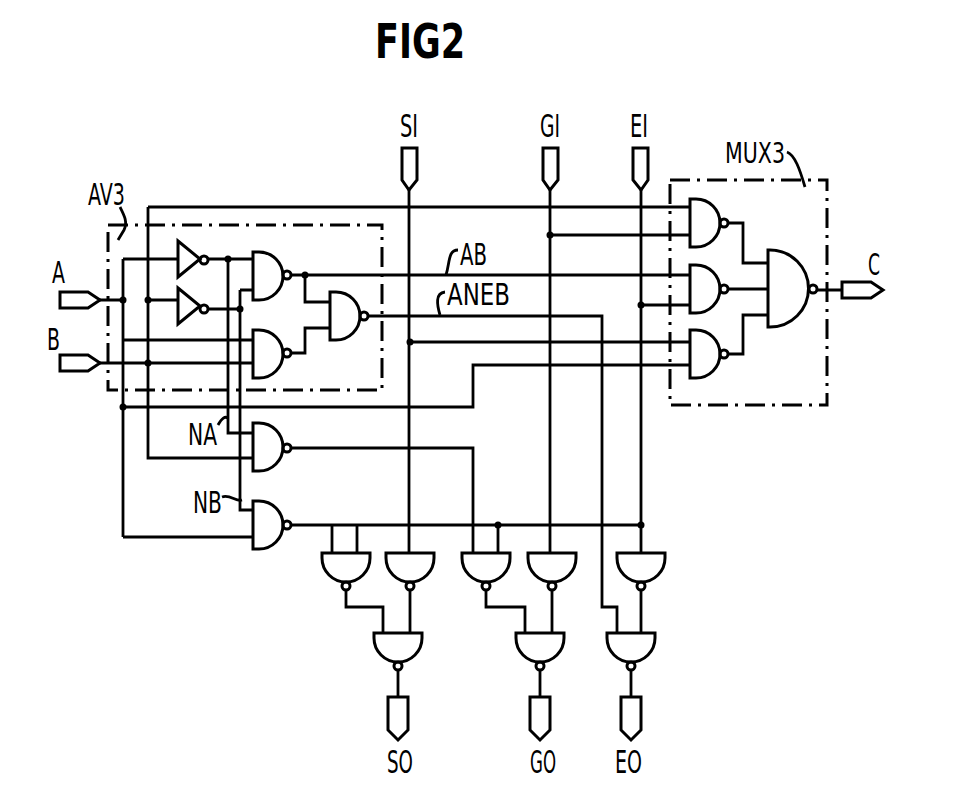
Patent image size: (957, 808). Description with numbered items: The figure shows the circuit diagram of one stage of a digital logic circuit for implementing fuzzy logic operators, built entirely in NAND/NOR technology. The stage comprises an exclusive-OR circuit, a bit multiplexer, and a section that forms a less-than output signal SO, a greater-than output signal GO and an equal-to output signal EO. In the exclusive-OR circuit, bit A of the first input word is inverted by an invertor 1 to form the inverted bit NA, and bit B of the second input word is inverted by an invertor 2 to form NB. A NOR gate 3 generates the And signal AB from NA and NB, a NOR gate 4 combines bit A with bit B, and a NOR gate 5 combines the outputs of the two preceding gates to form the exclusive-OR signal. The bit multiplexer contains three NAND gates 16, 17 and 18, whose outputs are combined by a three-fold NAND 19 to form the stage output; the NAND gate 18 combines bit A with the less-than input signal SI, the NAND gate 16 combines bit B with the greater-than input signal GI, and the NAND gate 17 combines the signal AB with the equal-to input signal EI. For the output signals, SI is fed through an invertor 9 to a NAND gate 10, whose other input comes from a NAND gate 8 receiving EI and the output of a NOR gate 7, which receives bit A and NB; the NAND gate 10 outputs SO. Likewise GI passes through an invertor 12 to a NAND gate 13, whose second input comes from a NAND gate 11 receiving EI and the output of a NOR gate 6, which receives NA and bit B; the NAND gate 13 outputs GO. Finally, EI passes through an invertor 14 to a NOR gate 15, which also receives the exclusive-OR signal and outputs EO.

The invertor 1 is at (192, 244).
The invertor 2 is at (195, 296).
The NOR gate 3 is at (272, 269).
The NOR gate 4 is at (272, 344).
The NOR gate 5 is at (347, 328).
The NOR gate 6 is at (276, 462).
The NOR gate 7 is at (268, 548).
The NAND gate 8 is at (336, 575).
The invertor 9 is at (418, 575).
The NAND gate 10 is at (405, 655).
The NAND gate 11 is at (480, 575).
The invertor 12 is at (558, 576).
The NAND gate 13 is at (546, 653).
The invertor 14 is at (650, 576).
The NOR gate 15 is at (637, 653).
The NAND gate 16 is at (702, 206).
The NAND gate 17 is at (710, 284).
The NAND gate 18 is at (710, 348).
The three-fold NAND 19 is at (792, 288).